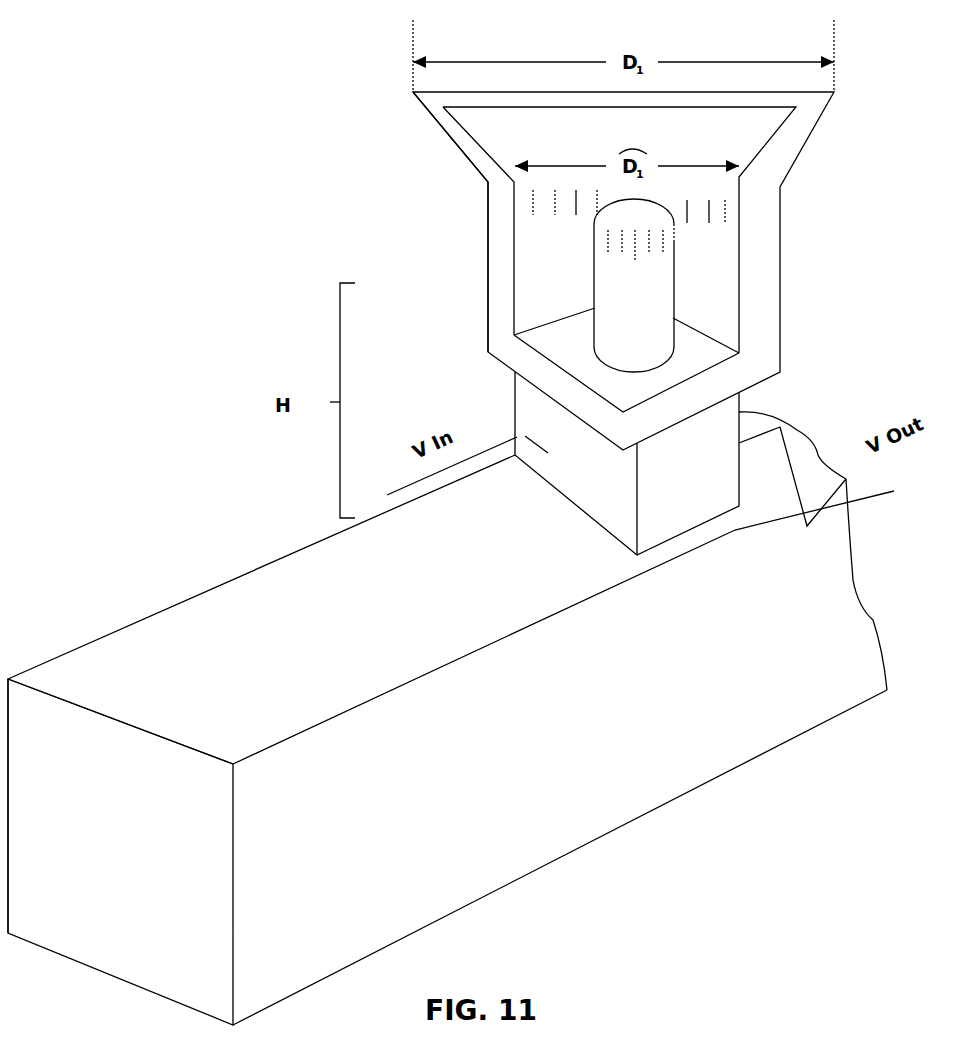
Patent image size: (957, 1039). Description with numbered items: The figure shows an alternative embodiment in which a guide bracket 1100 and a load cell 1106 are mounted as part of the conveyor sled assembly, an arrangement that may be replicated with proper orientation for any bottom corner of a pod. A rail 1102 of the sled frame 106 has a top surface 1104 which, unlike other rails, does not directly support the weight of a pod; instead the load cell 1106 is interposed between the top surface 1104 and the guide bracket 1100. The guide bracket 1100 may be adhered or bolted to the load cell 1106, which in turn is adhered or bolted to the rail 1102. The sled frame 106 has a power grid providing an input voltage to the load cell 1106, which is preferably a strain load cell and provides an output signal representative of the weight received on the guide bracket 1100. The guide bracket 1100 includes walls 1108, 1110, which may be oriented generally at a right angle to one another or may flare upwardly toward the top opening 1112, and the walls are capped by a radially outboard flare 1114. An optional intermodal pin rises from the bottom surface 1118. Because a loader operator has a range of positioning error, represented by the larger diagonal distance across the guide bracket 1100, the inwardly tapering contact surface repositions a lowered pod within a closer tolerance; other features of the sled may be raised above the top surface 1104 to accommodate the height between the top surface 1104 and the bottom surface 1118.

The sled frame 106 is at (75, 590).
The guide bracket 1100 is at (750, 220).
The rail 1102 is at (250, 587).
The top surface 1104 is at (230, 667).
The load cell 1106 is at (627, 377).
The wall 1108 is at (717, 233).
The wall 1110 is at (553, 221).
The top opening 1112 is at (748, 131).
The radially outboard flare 1114 is at (450, 143).
The surface 1118 is at (626, 360).